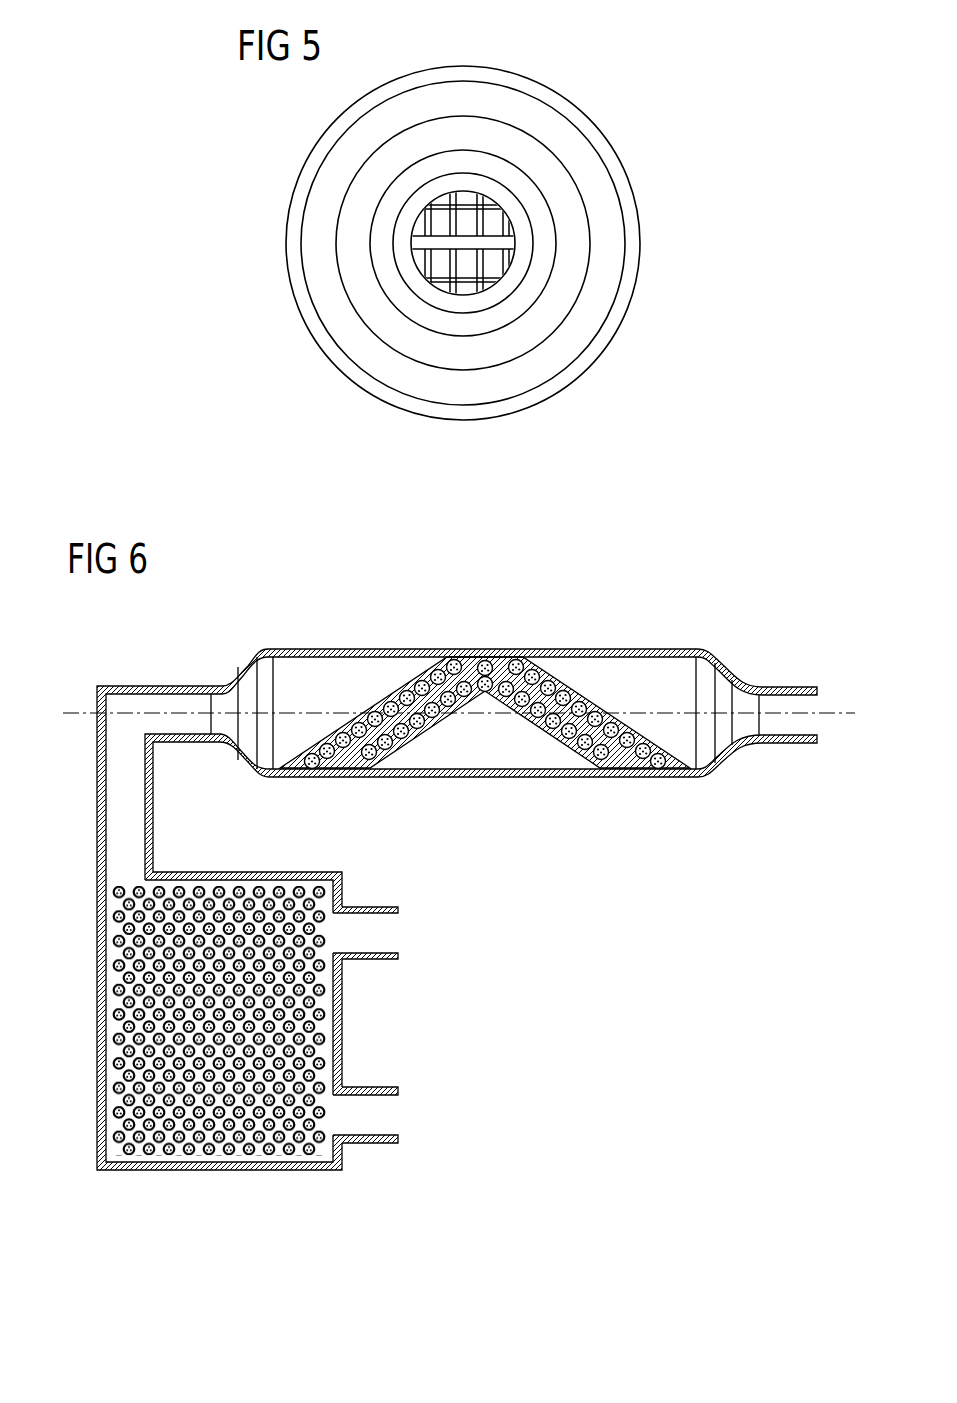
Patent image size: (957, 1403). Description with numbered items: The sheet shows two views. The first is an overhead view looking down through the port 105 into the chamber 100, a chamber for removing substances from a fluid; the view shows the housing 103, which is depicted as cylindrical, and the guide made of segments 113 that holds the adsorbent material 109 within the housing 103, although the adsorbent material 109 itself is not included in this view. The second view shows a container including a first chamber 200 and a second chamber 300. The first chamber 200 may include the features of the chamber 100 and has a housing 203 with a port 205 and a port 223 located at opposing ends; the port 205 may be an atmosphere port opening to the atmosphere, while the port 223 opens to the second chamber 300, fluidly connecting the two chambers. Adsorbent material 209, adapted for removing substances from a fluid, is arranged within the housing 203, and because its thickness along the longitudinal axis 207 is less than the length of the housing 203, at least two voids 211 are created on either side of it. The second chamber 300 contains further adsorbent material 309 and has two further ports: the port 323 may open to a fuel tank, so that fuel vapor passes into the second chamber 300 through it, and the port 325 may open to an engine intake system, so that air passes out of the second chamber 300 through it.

In FIG. 5, the chamber 100 is at (695, 87).
In FIG. 5, the housing 103 is at (640, 226).
In FIG. 5, the port 105 is at (452, 295).
In FIG. 5, the adsorbent material 109 is at (500, 263).
In FIG. 5, the segments 113 is at (415, 241).
In FIG. 6, the first chamber 200 is at (729, 631).
In FIG. 6, the housing 203 is at (590, 778).
In FIG. 6, the port 205 is at (808, 720).
In FIG. 6, the longitudinal axis 207 is at (72, 706).
In FIG. 6, the adsorbent material 209 is at (348, 726).
In FIG. 6, the voids 211 is at (397, 667).
In FIG. 6, the port 223 is at (177, 700).
In FIG. 6, the second chamber 300 is at (400, 868).
In FIG. 6, the further adsorbent material 309 is at (212, 1153).
In FIG. 6, the port 323 is at (390, 1118).
In FIG. 6, the port 325 is at (390, 935).